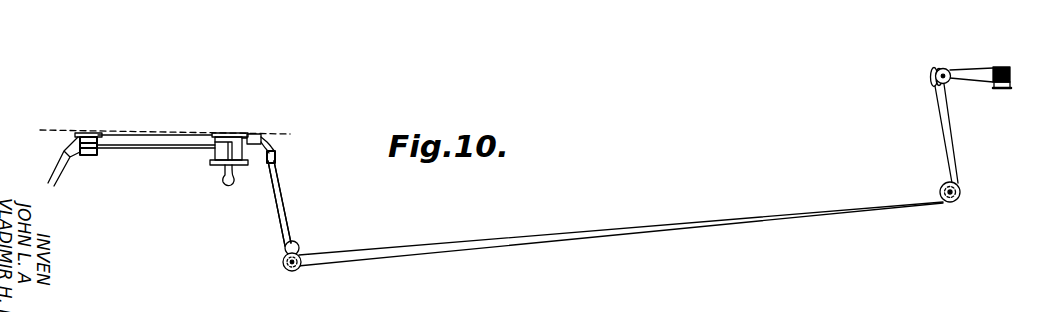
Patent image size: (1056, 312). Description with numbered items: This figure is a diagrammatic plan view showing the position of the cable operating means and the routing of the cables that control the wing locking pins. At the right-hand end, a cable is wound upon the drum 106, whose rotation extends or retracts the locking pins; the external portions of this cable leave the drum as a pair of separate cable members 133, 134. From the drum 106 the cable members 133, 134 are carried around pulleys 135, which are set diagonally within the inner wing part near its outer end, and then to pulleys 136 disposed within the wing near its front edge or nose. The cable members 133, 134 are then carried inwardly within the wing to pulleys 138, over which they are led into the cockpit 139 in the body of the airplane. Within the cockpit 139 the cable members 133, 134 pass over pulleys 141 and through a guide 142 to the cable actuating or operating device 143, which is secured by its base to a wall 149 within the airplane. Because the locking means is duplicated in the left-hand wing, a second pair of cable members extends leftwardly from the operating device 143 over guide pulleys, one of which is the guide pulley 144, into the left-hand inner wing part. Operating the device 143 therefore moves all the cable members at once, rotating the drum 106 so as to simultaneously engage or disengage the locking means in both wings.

The drum 106 is at (1003, 67).
The cable member 133 is at (277, 208).
The cable member 134 is at (281, 177).
The pulleys 135 is at (938, 68).
The pulleys 136 is at (960, 193).
The pulleys 138 is at (300, 243).
The cockpit 139 is at (297, 207).
The pulleys 141 is at (276, 156).
The guide 142 is at (258, 133).
The cable actuating or operating device 143 is at (215, 153).
The guide pulley 144 is at (88, 133).
The wall 149 is at (139, 136).